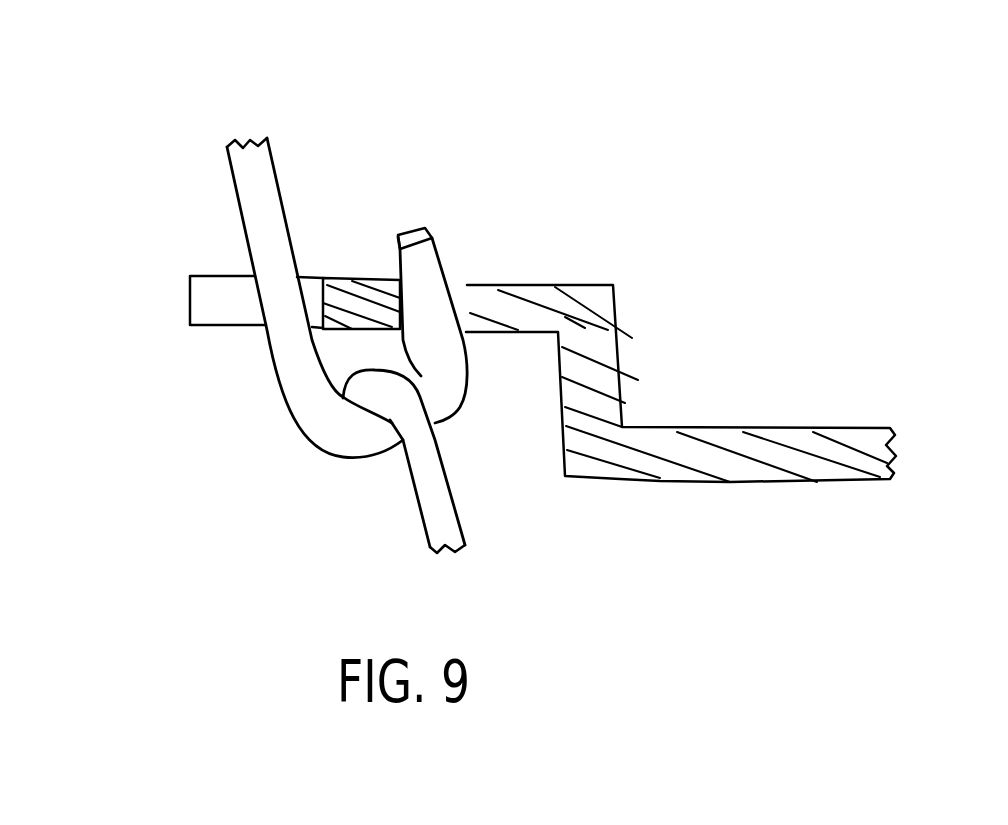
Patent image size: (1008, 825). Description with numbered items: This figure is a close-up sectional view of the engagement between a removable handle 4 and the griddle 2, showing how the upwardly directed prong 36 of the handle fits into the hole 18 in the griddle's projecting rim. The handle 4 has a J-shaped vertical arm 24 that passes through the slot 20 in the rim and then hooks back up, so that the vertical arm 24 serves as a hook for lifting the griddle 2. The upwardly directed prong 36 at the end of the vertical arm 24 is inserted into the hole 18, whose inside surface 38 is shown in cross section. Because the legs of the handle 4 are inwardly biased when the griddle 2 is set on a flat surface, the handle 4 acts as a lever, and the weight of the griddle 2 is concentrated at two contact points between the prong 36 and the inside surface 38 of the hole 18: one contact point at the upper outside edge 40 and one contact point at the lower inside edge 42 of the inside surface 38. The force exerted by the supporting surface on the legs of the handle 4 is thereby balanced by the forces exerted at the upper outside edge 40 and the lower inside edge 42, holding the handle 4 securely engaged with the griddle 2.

The griddle 2 is at (768, 370).
The removable handle 4 is at (292, 125).
The hole 18 is at (467, 262).
The slot 20 is at (227, 345).
The vertical arm 24 is at (250, 203).
The upwardly directed prong 36 is at (418, 218).
The inside surface 38 is at (458, 293).
The contact point at upper outside edge 40 is at (393, 280).
The contact point at lower inside edge 42 is at (465, 337).